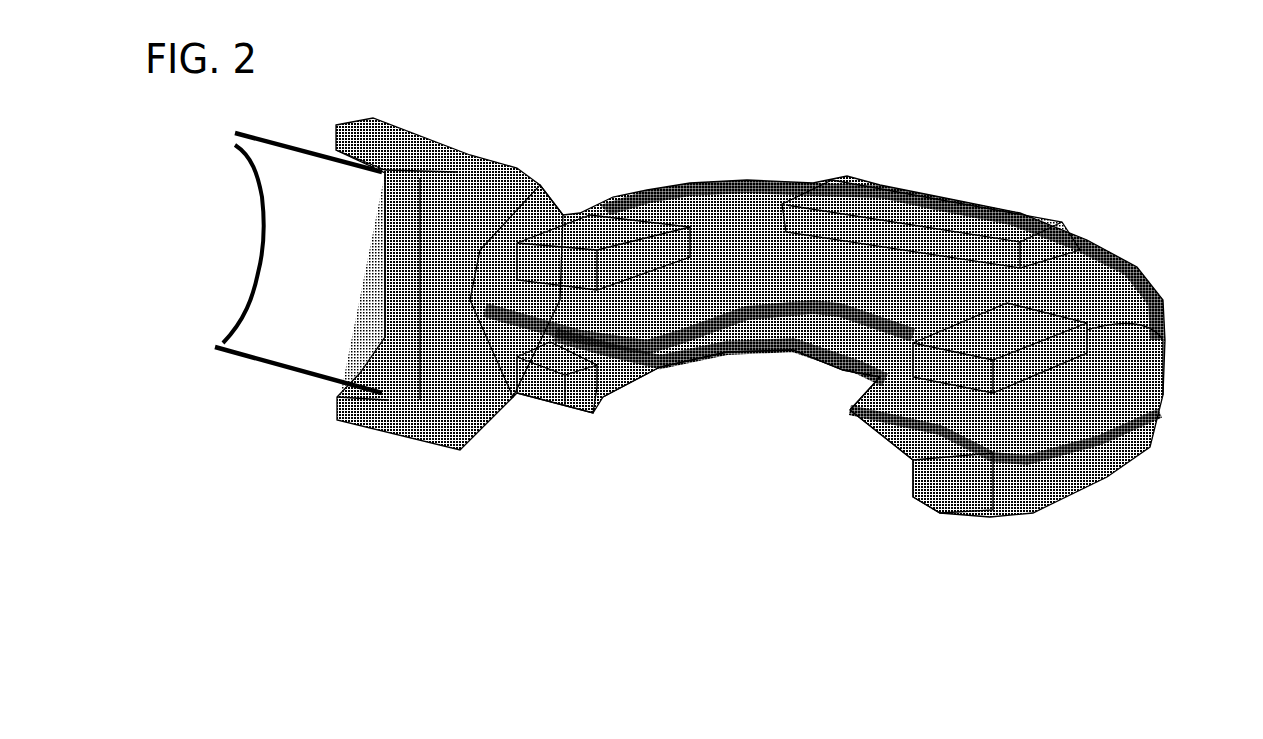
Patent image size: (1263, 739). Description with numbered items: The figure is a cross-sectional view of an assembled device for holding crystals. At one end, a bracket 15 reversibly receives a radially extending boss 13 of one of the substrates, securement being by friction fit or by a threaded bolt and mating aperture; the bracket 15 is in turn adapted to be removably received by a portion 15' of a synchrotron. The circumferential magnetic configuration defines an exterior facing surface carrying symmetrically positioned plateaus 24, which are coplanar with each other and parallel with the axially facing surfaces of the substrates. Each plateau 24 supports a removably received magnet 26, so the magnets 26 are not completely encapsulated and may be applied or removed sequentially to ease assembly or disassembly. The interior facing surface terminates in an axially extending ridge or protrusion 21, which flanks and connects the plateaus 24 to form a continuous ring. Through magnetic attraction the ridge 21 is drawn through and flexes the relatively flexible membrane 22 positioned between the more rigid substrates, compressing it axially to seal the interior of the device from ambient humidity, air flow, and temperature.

The radially extending boss 13 is at (500, 267).
The bracket 15 is at (449, 261).
The portion of a synchrotron 15' is at (256, 263).
The axially extending ridge or protrusion 21 is at (877, 440).
The relatively flexible membrane 22 is at (850, 410).
The plateaus 24 is at (1127, 283).
The magnets 26 is at (1000, 337).